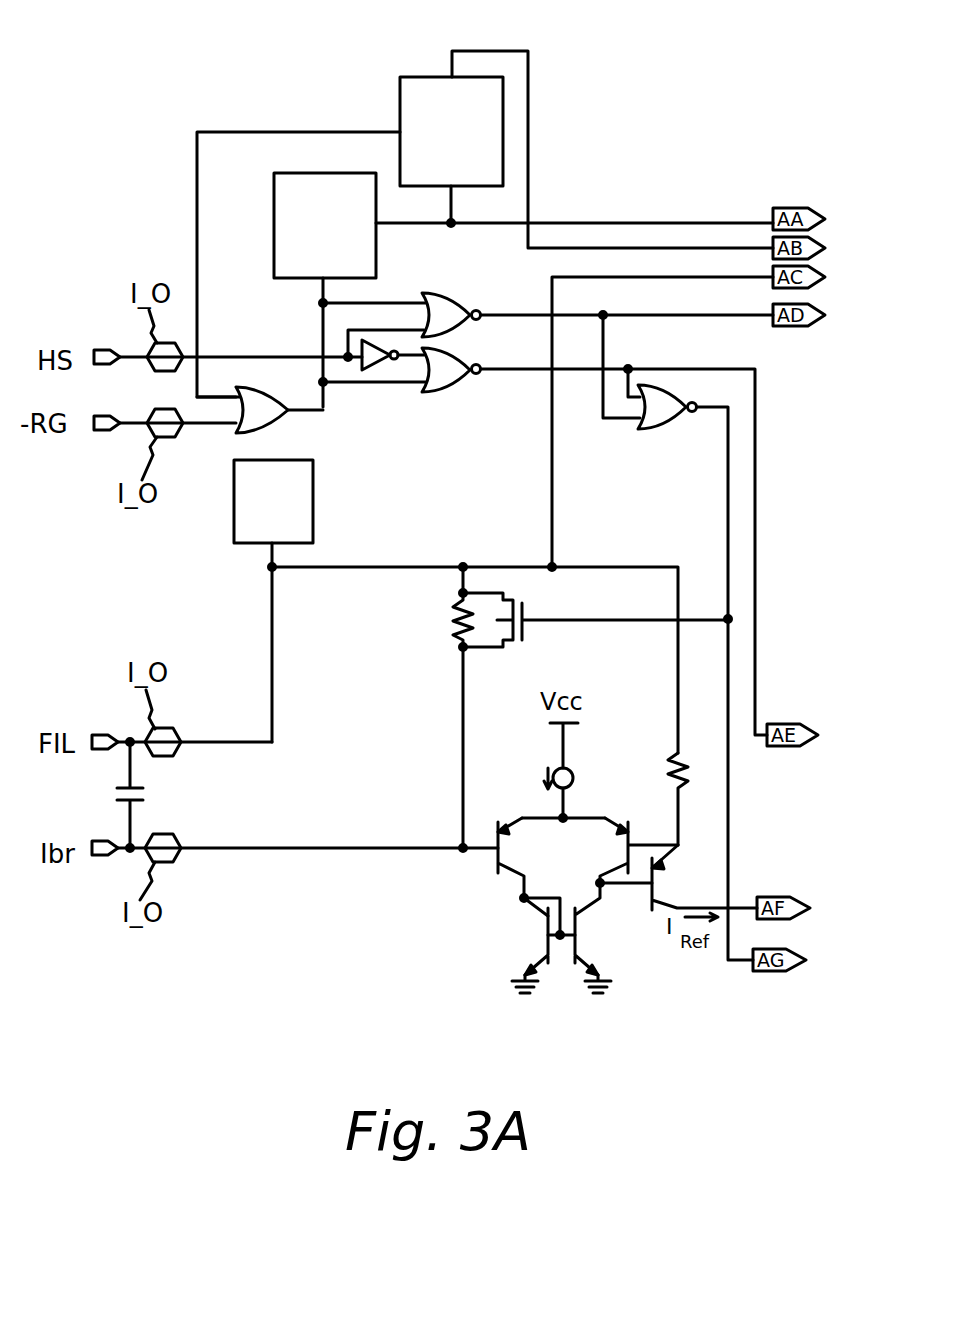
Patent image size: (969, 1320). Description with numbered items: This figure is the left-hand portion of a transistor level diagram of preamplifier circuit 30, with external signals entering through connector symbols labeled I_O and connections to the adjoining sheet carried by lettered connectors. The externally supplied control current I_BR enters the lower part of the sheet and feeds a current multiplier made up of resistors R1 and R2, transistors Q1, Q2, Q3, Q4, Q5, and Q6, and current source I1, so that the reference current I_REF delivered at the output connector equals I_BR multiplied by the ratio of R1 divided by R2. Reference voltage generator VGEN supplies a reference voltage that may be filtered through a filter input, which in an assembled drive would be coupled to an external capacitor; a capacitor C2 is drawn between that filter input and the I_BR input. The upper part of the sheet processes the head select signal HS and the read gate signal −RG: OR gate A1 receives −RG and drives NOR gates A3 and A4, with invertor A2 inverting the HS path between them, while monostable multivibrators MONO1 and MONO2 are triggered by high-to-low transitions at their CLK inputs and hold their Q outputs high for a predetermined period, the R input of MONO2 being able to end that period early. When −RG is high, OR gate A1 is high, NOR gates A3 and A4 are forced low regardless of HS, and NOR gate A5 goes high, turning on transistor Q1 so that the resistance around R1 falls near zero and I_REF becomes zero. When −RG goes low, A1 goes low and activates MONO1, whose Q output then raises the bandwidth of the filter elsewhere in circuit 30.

The monostable multivibrator MONO1 is at (308, 173).
The monostable multivibrator MONO2 is at (400, 108).
The OR gate A1 is at (266, 388).
The invertor A2 is at (377, 372).
The NOR gate A3 is at (446, 292).
The NOR gate A4 is at (448, 393).
The NOR gate A5 is at (651, 430).
The reference voltage generator VGEN is at (456, 606).
The resistor R1 is at (435, 708).
The resistor R2 is at (693, 790).
The transistor Q1 is at (595, 609).
The transistor Q2 is at (522, 858).
The transistor Q3 is at (531, 950).
The transistor Q4 is at (603, 938).
The transistor Q5 is at (631, 850).
The transistor Q6 is at (704, 877).
The current source I1 is at (574, 770).
The capacitor C2 is at (91, 795).
The preamplifier circuit 30 is at (245, 942).